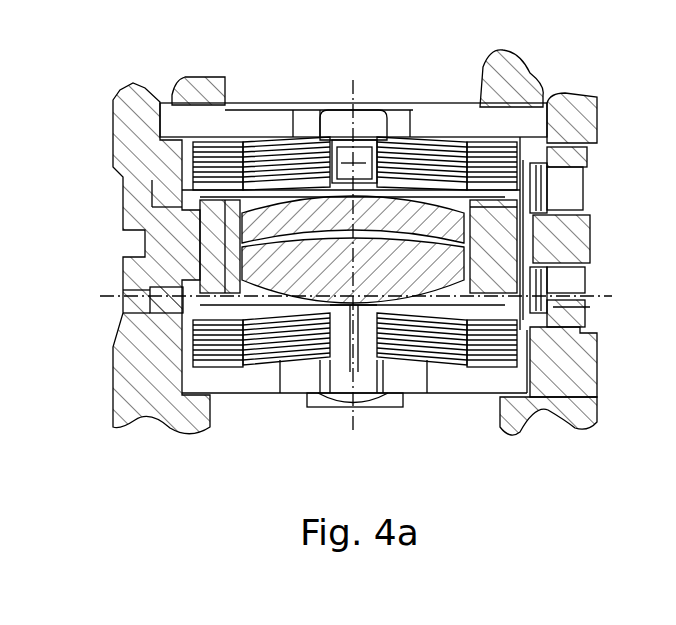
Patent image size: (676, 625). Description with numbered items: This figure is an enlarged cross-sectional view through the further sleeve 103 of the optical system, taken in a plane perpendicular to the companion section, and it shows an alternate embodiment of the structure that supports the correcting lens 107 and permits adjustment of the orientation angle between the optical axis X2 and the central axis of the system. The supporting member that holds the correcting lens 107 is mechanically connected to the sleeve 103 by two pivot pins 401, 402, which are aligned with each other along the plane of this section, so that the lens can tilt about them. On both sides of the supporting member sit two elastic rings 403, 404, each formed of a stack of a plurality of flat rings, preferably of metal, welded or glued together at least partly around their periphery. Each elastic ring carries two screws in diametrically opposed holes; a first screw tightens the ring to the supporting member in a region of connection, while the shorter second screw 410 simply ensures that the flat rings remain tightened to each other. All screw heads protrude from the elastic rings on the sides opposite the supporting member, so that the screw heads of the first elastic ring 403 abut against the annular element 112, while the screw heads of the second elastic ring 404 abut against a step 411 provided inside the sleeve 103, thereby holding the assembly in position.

The annular element 112 is at (205, 83).
The optical axis X2 is at (355, 92).
The second screw 410 is at (360, 137).
The further sleeve 103 is at (573, 107).
The first elastic ring 403 is at (533, 143).
The pivot pin 402 is at (540, 233).
The second elastic ring 404 is at (517, 358).
The pivot pin 401 is at (177, 260).
The correcting lens 107 is at (122, 315).
The step 411 is at (495, 385).